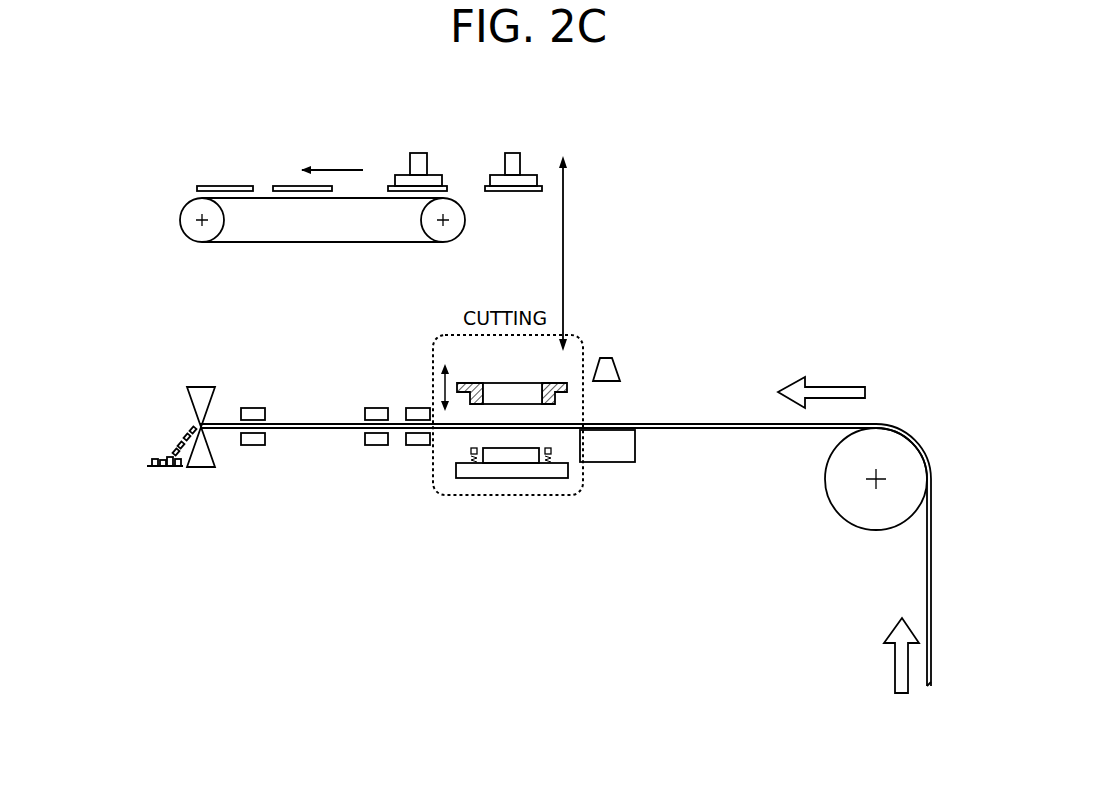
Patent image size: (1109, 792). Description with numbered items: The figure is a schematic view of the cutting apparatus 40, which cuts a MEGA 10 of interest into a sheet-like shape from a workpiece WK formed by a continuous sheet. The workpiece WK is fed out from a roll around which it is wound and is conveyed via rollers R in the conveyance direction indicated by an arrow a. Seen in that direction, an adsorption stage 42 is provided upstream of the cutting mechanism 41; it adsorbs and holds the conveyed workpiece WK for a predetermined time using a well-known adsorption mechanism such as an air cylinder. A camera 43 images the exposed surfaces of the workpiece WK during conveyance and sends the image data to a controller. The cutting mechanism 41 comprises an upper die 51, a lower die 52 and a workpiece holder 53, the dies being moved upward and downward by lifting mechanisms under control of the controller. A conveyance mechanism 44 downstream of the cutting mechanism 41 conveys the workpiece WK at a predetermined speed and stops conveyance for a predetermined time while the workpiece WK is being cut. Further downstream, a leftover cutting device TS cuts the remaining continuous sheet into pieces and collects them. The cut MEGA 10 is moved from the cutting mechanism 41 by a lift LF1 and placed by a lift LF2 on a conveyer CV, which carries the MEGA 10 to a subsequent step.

The MEGA 10 is at (216, 185).
The cutting apparatus 40 is at (624, 297).
The cutting mechanism 41 is at (460, 350).
The adsorption stage 42 is at (636, 447).
The camera 43 is at (610, 382).
The conveyance mechanism 44 is at (376, 390).
The upper die 51 is at (504, 382).
The lower die 52 is at (518, 479).
The workpiece holder 53 is at (471, 449).
The conveyer CV is at (302, 243).
The lift LF1 is at (512, 153).
The lift LF2 is at (418, 153).
The workpiece WK is at (712, 422).
The rollers R is at (826, 480).
The leftover cutting device TS is at (190, 402).
The arrow a is at (842, 385).